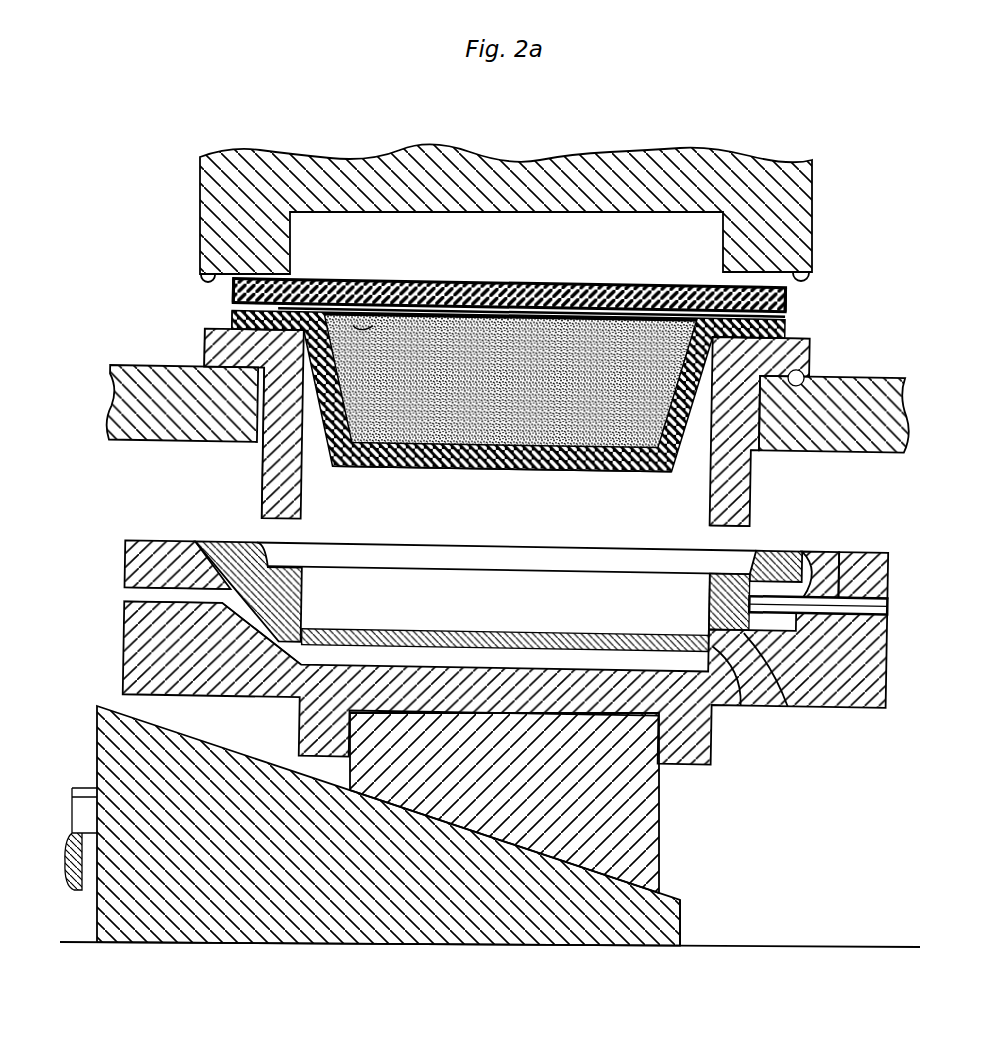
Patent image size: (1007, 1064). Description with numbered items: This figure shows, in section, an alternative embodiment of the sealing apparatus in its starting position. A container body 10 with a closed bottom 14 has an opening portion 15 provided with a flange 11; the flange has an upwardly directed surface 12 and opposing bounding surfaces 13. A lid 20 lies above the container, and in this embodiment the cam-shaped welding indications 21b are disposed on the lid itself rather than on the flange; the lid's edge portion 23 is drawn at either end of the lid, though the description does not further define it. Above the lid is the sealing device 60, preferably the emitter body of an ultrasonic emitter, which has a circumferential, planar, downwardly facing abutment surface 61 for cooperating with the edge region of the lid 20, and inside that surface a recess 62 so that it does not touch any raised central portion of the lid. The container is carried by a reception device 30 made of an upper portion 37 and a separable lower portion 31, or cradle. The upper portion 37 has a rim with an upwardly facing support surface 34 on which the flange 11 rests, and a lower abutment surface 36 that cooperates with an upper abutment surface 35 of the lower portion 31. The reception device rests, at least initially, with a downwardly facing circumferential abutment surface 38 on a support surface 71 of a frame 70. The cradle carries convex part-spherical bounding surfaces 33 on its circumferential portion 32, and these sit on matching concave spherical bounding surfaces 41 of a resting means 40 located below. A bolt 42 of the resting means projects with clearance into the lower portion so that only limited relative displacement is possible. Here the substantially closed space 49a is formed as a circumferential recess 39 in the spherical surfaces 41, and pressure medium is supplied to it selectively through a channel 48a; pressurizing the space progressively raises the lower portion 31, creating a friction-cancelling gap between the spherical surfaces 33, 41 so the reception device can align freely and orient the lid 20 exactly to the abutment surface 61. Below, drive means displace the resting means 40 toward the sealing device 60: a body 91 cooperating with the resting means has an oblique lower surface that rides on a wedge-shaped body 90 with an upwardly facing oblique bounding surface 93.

The sealing device 60 is at (793, 205).
The abutment surface 61 is at (212, 284).
The recess 62 is at (540, 240).
The lid 20 is at (560, 300).
The welding indications 21b is at (788, 312).
The plate edge 23 is at (394, 285).
The opening portion 15 is at (368, 322).
The container body 10 is at (386, 462).
The closed bottom 14 is at (526, 470).
The upwardly directed surface 12 is at (232, 316).
The flange 11 is at (228, 328).
The bounding surfaces 13 is at (216, 347).
The reception device 30 is at (800, 350).
The support surface 34 is at (790, 337).
The upper portion 37 is at (282, 487).
The abutment surface 38 is at (767, 452).
The lower abutment surface 36 is at (742, 532).
The frame 70 is at (862, 436).
The support surface 71 is at (805, 377).
The resting means 40 is at (827, 682).
The channel 48a is at (178, 592).
The circumferential recess 39 is at (232, 604).
The substantially closed space 49a is at (240, 624).
The circumferential portion 32 is at (285, 588).
The upper abutment surface 35 is at (712, 574).
The spherical bounding surfaces 33 is at (807, 568).
The bolt 42 is at (841, 560).
The lower portion 31 is at (804, 566).
The spherical bounding surfaces 41 is at (818, 552).
The wedge-shaped body 90 is at (262, 920).
The body 91 is at (632, 820).
The oblique bounding surface 93 is at (668, 900).